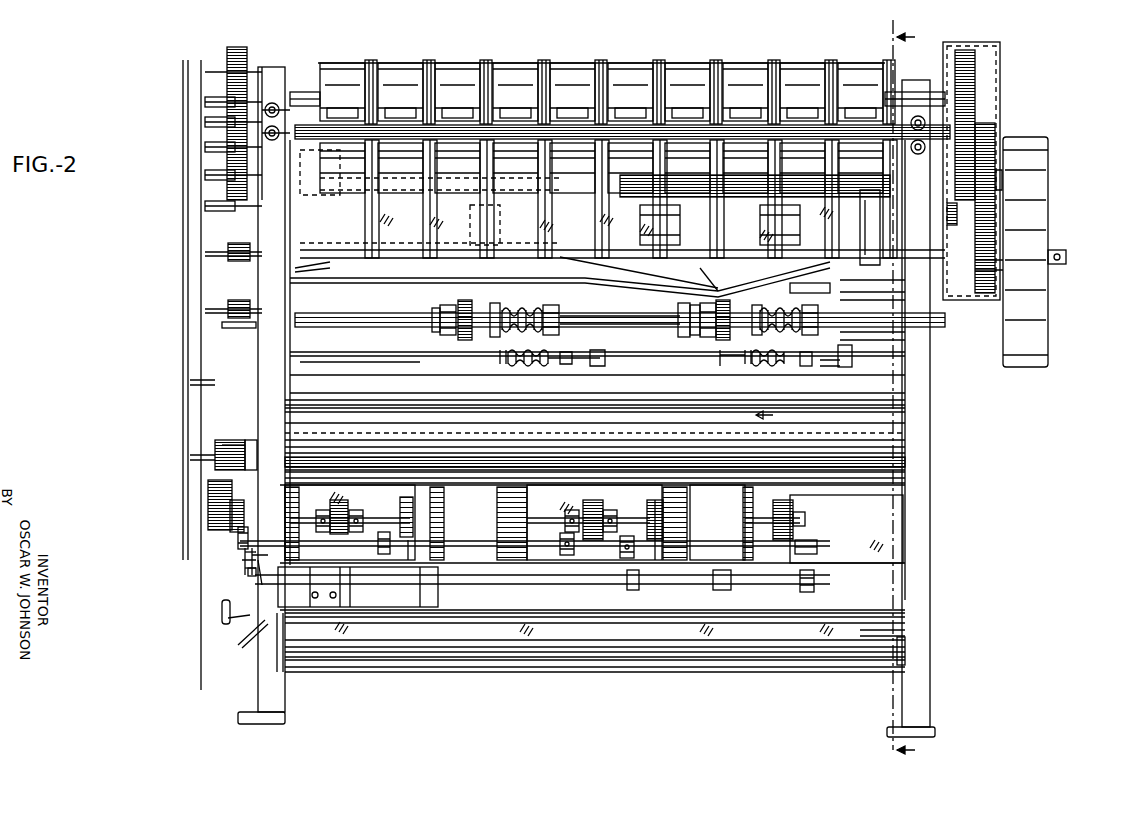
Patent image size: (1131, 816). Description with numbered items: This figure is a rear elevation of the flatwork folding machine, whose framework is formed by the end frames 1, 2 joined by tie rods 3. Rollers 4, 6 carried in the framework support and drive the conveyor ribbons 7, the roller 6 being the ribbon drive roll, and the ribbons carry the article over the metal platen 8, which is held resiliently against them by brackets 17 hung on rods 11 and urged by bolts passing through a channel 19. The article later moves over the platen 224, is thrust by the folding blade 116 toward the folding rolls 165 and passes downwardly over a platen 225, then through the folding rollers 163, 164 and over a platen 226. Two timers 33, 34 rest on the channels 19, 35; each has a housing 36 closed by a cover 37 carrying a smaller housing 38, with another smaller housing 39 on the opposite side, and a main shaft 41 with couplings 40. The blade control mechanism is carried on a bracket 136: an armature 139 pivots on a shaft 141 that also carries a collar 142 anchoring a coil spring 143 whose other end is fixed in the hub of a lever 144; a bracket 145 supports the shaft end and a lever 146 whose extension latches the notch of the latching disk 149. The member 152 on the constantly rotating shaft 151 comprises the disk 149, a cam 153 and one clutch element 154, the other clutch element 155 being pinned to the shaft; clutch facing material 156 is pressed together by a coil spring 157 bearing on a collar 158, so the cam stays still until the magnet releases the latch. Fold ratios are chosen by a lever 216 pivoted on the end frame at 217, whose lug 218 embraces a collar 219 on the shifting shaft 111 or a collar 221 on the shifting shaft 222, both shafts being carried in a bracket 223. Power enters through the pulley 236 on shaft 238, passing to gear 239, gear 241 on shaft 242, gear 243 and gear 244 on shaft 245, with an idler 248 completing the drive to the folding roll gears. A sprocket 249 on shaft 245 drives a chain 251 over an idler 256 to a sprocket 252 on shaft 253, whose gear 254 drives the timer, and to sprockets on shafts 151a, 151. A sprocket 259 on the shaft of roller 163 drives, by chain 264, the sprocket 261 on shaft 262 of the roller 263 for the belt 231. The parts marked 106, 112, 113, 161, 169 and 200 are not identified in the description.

The end frame 1 is at (262, 685).
The end frame 2 is at (917, 690).
The tie rods 3 is at (455, 125).
The roller 4 is at (811, 351).
The roller 6 is at (322, 63).
The conveyor ribbons 7 is at (568, 65).
The platen 8 is at (900, 292).
The rods 11 is at (895, 255).
The brackets 17 is at (898, 335).
The channel 19 is at (900, 520).
The timer 33 is at (714, 615).
The timer 34 is at (472, 615).
The channel 35 is at (890, 632).
The housing 36 is at (542, 521).
The cover 37 is at (525, 505).
The smaller housing 38 is at (808, 519).
The smaller housing 39 is at (655, 500).
The couplings 40 is at (330, 507).
The main shaft 41 is at (240, 538).
The coupling 106 is at (805, 547).
The shifting shaft 111 is at (362, 588).
The coupling 112 is at (695, 562).
The coupling 113 is at (535, 561).
The folding blade 116 is at (770, 200).
The bracket 136 is at (345, 370).
The armature 139 is at (845, 356).
The shaft 141 is at (832, 370).
The collar 142 is at (812, 378).
The coil spring 143 is at (510, 362).
The lever 144 is at (514, 352).
The bracket 145 is at (492, 353).
The lever 146 is at (726, 356).
The latching disk 149 is at (553, 297).
The shaft 151 is at (213, 308).
The shaft 151a is at (210, 330).
The member 152 is at (462, 332).
The cam 153 is at (495, 304).
The clutch element 154 is at (694, 318).
The clutch element 155 is at (435, 323).
The clutch facing material 156 is at (448, 306).
The coil spring 157 is at (677, 307).
The collar 158 is at (703, 317).
The lever 161 is at (682, 268).
The folding roller 163 is at (680, 155).
The folding roller 164 is at (205, 122).
The folding roll 165 is at (660, 200).
The bar 169 is at (205, 176).
The box 200 is at (478, 232).
The lever 216 is at (222, 620).
The pivot 217 is at (245, 566).
The lug 218 is at (205, 102).
The collar 219 is at (252, 572).
The collar 221 is at (245, 550).
The shifting shaft 222 is at (358, 587).
The bracket 223 is at (238, 645).
The platen 224 is at (800, 288).
The platen 225 is at (310, 265).
The platen 226 is at (320, 180).
The belt 231 is at (897, 470).
The pulley 236 is at (1040, 312).
The shaft 238 is at (1050, 255).
The gear 239 is at (985, 272).
The gear 241 is at (995, 128).
The shaft 242 is at (1000, 185).
The gear 243 is at (962, 214).
The gear 244 is at (964, 52).
The shaft 245 is at (303, 92).
The idler 248 is at (238, 50).
The sprocket 249 is at (205, 72).
The chain 251 is at (205, 206).
The sprocket 252 is at (208, 485).
The shaft 253 is at (250, 450).
The gear 254 is at (228, 446).
The idler 256 is at (205, 254).
The sprocket 259 is at (205, 145).
The sprocket 261 is at (205, 456).
The shaft 262 is at (228, 450).
The roller 263 is at (900, 452).
The chain 264 is at (200, 382).